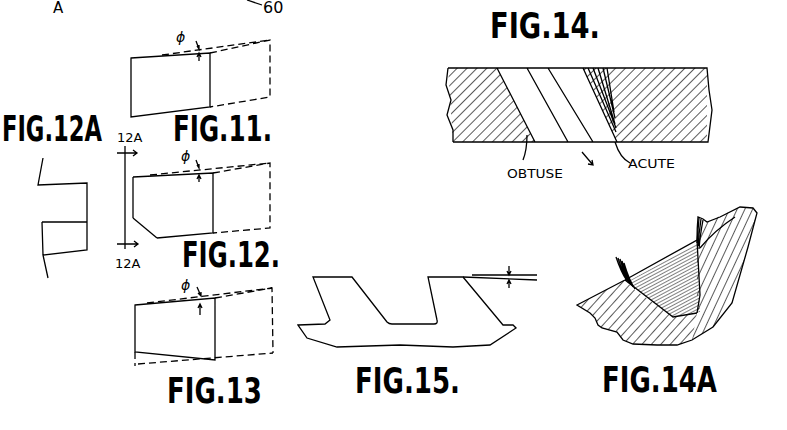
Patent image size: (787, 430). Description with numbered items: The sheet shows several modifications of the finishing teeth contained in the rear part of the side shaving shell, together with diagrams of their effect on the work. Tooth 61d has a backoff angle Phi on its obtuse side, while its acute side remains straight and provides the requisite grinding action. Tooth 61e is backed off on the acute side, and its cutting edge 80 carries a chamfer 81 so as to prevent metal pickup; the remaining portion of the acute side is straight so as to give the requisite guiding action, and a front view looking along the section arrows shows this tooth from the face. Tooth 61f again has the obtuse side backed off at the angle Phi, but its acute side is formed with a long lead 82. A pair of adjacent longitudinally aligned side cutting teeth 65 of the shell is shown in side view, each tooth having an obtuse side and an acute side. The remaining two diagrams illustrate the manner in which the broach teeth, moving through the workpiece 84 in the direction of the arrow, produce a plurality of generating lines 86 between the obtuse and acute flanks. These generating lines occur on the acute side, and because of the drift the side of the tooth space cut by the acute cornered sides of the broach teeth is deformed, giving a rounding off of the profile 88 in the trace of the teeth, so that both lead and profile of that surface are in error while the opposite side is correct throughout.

In FIG. 11, the tooth 61d is at (148, 85).
In FIG. 12, the tooth 61e is at (133, 183).
In FIG. 13, the tooth 61f is at (150, 317).
In FIG. 12, the cutting edge 80 is at (133, 195).
In FIG. 12, the chamfer 81 is at (140, 227).
In FIG. 13, the long lead 82 is at (152, 353).
In FIG. 15, the side cutting teeth 65 is at (332, 282).
In FIG. 14, the workpiece 84 is at (487, 137).
In FIG. 14A, the workpiece 84 is at (595, 318).
In FIG. 14, the generating lines 86 is at (602, 78).
In FIG. 14A, the rounding off of the profile 88 is at (732, 214).